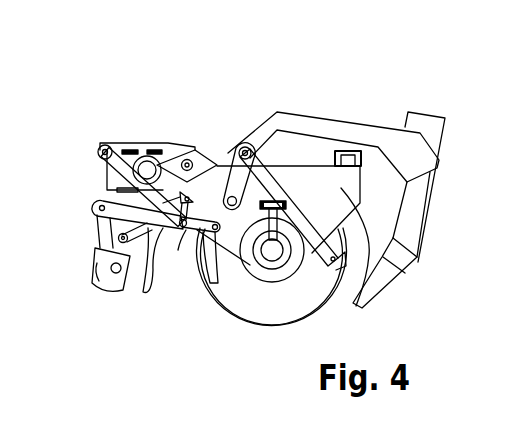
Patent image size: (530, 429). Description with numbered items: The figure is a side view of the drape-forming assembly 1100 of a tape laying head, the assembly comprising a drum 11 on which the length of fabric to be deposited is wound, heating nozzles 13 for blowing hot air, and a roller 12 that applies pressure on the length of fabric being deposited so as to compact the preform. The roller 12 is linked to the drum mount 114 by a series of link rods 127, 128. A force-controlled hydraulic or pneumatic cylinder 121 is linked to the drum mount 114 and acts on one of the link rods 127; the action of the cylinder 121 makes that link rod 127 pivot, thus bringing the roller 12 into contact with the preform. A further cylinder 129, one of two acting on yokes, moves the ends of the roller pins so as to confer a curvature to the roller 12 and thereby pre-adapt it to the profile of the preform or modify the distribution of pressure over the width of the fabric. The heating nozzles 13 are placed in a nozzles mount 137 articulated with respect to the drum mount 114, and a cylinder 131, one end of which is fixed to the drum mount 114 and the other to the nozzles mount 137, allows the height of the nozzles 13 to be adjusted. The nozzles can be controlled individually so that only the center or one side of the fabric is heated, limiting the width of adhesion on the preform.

The drape-forming assembly 1100 is at (313, 92).
The drum 11 is at (272, 305).
The roller 12 is at (97, 264).
The heating nozzles 13 is at (415, 207).
The drum mount 114 is at (347, 198).
The cylinder 121 is at (105, 171).
The link rod 127 is at (185, 232).
The link rod 128 is at (100, 228).
The cylinder 129 is at (148, 243).
The cylinder 131 is at (304, 210).
The nozzles mount 137 is at (343, 116).